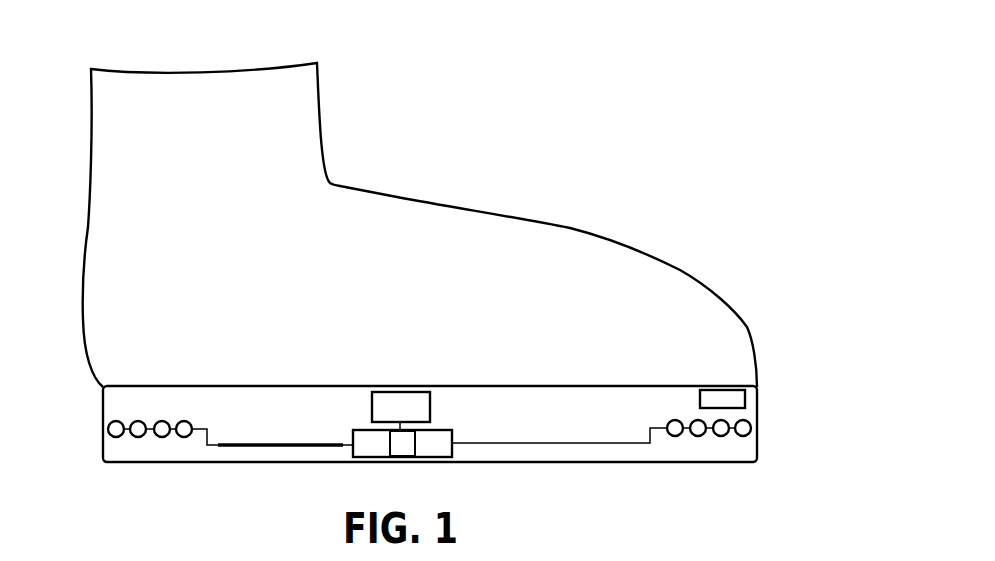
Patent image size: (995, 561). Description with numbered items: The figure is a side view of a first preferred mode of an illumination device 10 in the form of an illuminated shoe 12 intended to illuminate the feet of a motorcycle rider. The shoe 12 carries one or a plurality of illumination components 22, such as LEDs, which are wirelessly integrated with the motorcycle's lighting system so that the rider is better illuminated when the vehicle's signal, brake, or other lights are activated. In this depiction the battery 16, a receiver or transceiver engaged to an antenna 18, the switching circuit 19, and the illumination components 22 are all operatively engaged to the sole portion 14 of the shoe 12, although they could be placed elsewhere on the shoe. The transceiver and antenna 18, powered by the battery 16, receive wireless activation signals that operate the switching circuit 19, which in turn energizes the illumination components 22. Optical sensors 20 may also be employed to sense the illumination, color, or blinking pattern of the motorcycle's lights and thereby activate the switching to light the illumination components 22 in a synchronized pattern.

The illumination device 10 is at (644, 122).
The illuminated shoe 12 is at (83, 245).
The sole portion 14 is at (208, 457).
The battery 16 is at (405, 388).
The transceiver and antenna 18 is at (358, 428).
The switching circuit 19 is at (400, 453).
The optical sensors 20 is at (715, 388).
The illumination components 22 is at (142, 421).